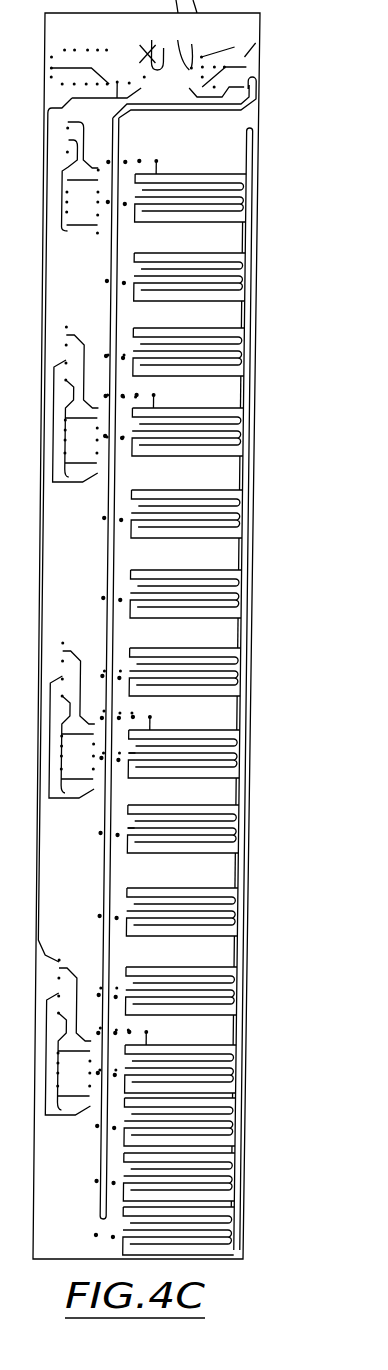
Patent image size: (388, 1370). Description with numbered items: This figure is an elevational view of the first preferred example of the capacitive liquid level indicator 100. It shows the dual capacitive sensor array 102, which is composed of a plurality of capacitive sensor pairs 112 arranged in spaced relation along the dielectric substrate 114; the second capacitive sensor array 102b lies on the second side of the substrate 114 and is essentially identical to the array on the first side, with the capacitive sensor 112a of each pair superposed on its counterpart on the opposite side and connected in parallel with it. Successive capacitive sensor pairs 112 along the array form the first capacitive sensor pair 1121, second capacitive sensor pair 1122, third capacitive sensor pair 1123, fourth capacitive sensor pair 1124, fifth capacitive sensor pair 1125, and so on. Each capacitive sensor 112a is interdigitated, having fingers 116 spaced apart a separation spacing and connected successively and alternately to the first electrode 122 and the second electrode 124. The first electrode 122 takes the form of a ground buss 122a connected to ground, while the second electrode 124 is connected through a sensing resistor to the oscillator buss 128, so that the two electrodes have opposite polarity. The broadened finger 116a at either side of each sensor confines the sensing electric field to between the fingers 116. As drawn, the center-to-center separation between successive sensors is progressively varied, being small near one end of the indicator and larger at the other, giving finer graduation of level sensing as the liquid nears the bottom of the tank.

The capacitive liquid level indicator 100 is at (284, 84).
The dual capacitive sensor array 102 is at (118, 286).
The second capacitive sensor array 102b is at (231, 396).
The capacitive sensor pair 112 is at (248, 490).
The capacitive sensor 112a is at (236, 672).
The fifth capacitive sensor pair 1125 is at (248, 978).
The fourth capacitive sensor pair 1124 is at (231, 1063).
The third capacitive sensor pair 1123 is at (228, 1125).
The second capacitive sensor pair 1122 is at (231, 1175).
The first capacitive sensor pair 1121 is at (224, 1222).
The substrate 114 is at (253, 825).
The fingers 116 is at (236, 590).
The broadened finger 116a is at (211, 890).
The first electrode 122 is at (248, 788).
The ground buss 122a is at (246, 633).
The second electrode 124 is at (128, 760).
The oscillator buss 128 is at (108, 853).